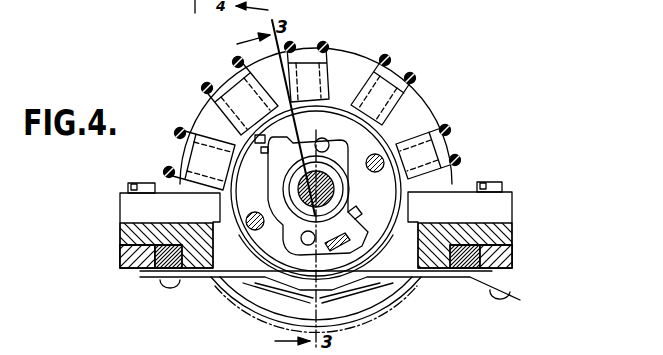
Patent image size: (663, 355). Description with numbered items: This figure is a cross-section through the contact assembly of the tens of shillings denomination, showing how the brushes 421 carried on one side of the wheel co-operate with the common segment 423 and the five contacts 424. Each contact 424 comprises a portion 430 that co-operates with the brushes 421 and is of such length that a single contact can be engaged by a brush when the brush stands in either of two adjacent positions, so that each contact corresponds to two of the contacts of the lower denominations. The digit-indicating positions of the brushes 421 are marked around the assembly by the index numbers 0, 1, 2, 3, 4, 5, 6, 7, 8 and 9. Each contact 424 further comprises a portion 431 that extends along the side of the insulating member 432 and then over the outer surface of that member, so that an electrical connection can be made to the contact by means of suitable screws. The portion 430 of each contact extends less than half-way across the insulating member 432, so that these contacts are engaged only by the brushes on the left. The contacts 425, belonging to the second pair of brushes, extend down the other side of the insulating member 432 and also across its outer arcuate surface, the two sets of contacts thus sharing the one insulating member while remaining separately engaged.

The brushes 421 is at (298, 132).
The common segment 423 is at (383, 298).
The contacts 424 is at (380, 100).
The contacts 425 is at (383, 70).
The portion of contact 430 is at (440, 138).
The portion of contact 431 is at (455, 178).
The insulating member 432 is at (348, 65).
The index number 0 is at (463, 157).
The index number 1 is at (451, 124).
The index number 2 is at (413, 72).
The index number 3 is at (386, 53).
The index number 4 is at (324, 39).
The index number 5 is at (291, 40).
The index number 6 is at (234, 62).
The index number 7 is at (203, 87).
The index number 8 is at (174, 134).
The index number 9 is at (164, 172).